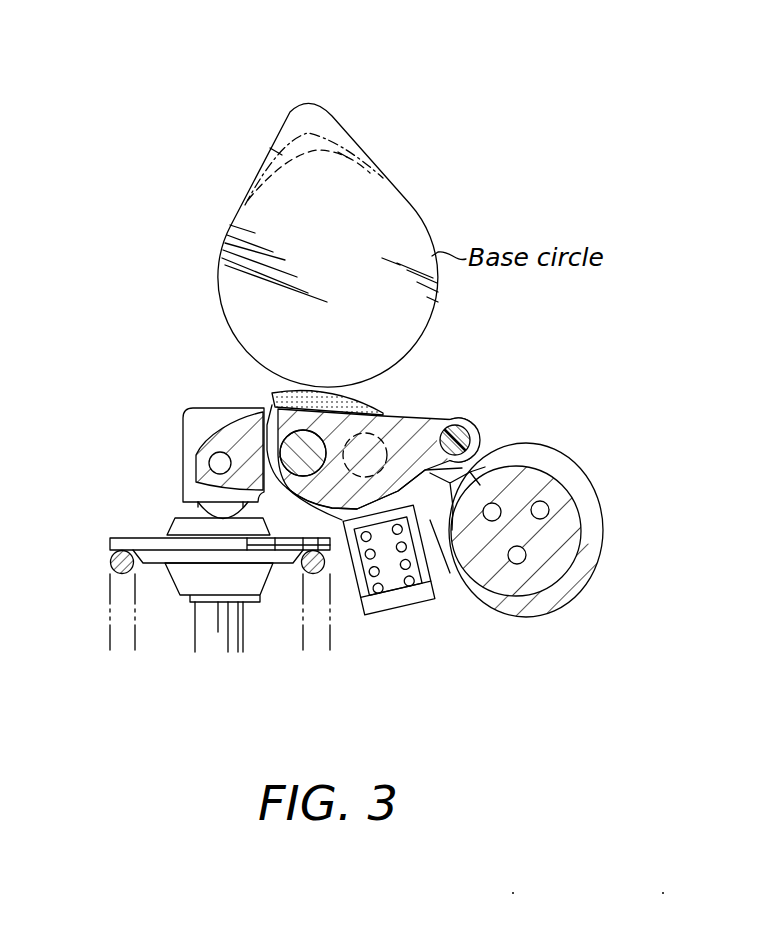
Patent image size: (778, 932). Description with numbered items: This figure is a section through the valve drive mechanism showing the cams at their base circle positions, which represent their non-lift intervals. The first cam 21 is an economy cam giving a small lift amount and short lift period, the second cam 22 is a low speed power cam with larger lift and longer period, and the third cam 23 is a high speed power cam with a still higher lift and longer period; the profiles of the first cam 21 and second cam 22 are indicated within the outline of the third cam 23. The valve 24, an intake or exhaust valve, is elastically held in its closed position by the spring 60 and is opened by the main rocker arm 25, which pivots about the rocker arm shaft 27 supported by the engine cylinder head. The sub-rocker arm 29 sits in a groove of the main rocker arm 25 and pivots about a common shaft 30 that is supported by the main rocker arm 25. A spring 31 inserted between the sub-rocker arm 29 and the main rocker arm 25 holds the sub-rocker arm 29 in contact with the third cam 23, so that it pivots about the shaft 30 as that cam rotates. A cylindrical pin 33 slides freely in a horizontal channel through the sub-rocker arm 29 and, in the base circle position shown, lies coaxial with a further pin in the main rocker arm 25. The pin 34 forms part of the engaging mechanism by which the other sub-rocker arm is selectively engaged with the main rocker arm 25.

The first cam 21 is at (360, 148).
The second cam 22 is at (262, 138).
The third cam 23 is at (333, 118).
The valve 24 is at (223, 632).
The main rocker arm 25 is at (183, 409).
The rocker arm shaft 27 is at (578, 526).
The sub-rocker arm 29 is at (417, 427).
The common shaft 30 is at (480, 428).
The spring 31 is at (380, 573).
The cylindrical pin 33 is at (272, 405).
The pin 34 is at (390, 460).
The spring 60 is at (108, 562).